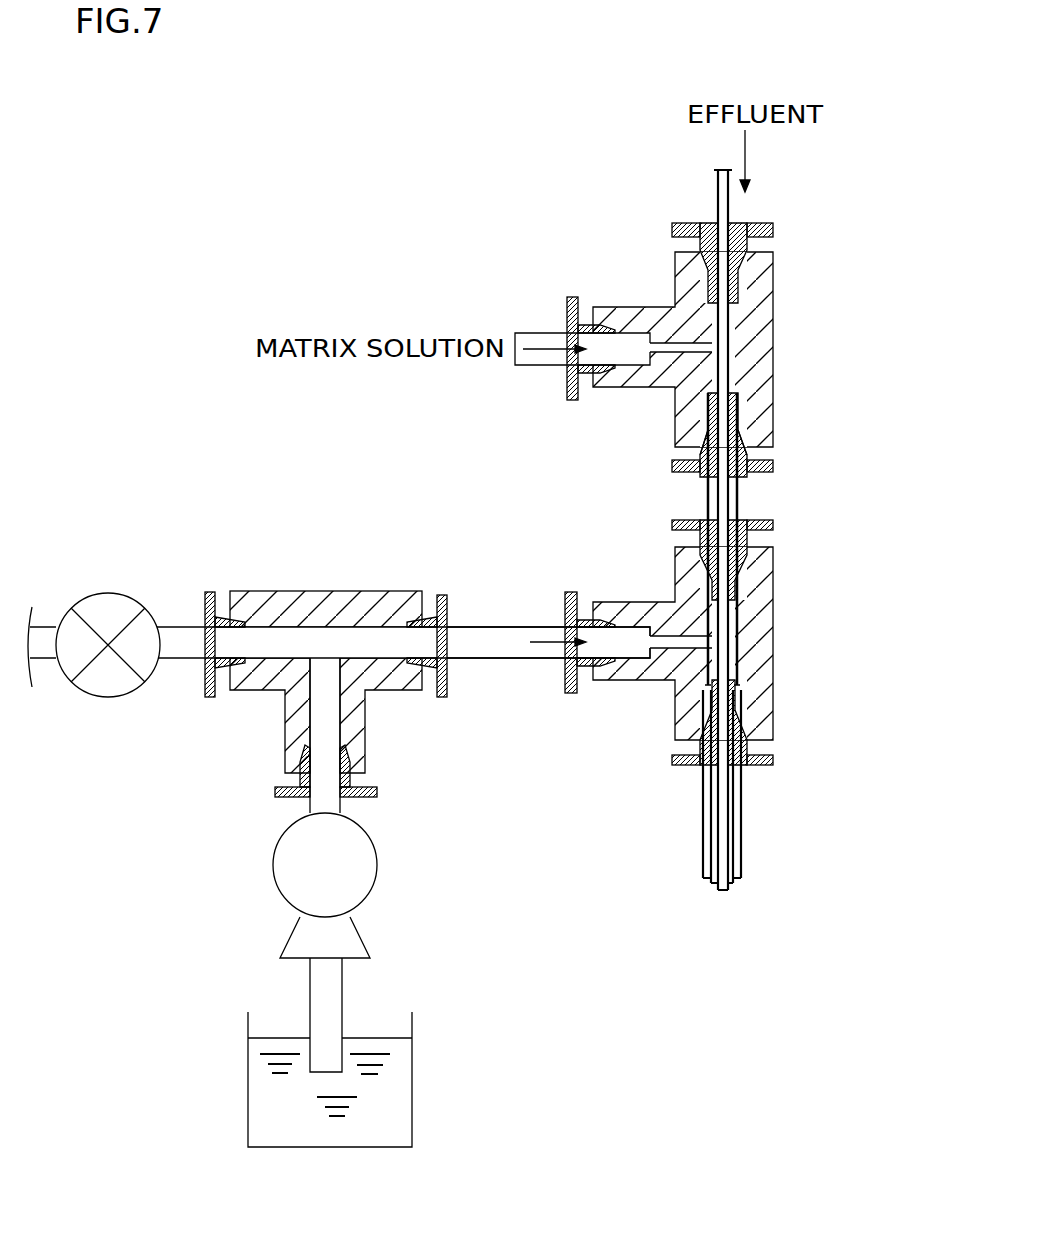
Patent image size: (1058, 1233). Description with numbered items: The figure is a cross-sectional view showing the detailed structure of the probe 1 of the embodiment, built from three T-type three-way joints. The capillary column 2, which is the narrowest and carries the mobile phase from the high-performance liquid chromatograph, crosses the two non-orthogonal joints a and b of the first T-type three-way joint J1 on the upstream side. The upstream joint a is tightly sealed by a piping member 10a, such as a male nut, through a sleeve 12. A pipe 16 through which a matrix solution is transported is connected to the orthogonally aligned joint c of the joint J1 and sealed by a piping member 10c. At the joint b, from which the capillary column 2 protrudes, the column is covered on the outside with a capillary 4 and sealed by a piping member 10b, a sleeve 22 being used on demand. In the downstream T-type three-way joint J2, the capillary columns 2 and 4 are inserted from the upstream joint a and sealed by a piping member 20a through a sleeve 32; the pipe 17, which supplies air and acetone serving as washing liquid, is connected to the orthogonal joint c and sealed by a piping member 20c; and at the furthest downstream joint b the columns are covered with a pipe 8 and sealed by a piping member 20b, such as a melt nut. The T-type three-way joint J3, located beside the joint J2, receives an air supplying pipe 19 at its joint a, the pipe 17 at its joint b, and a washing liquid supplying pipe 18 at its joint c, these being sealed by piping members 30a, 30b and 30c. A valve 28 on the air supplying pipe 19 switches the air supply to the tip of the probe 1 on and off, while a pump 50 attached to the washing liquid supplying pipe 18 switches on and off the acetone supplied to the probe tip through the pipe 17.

The probe 1 is at (833, 253).
The capillary column 2 is at (720, 205).
The capillary 4 is at (742, 496).
The pipe 8 is at (742, 814).
The piping member 10a is at (677, 227).
The piping member 10b is at (670, 465).
The piping member 10c is at (565, 305).
The sleeve 12 is at (707, 297).
The pipe 16 is at (546, 358).
The pipe 17 is at (548, 657).
The washing liquid supplying pipe 18 is at (327, 795).
The air supplying pipe 19 is at (178, 620).
The piping member 20a is at (775, 525).
The piping member 20b is at (672, 760).
The piping member 20c is at (570, 598).
The sleeve 22 is at (742, 456).
The valve 28 is at (115, 608).
The piping member 30a is at (205, 693).
The piping member 30b is at (444, 598).
The piping member 30c is at (370, 787).
The sleeve 32 is at (740, 583).
The pump 50 is at (337, 870).
The T-type three-way joint J1 is at (772, 357).
The T-type three-way joint J2 is at (770, 632).
The T-type three-way joint J3 is at (337, 622).
The joint a is at (760, 255).
The joint b is at (762, 430).
The joint c is at (617, 380).